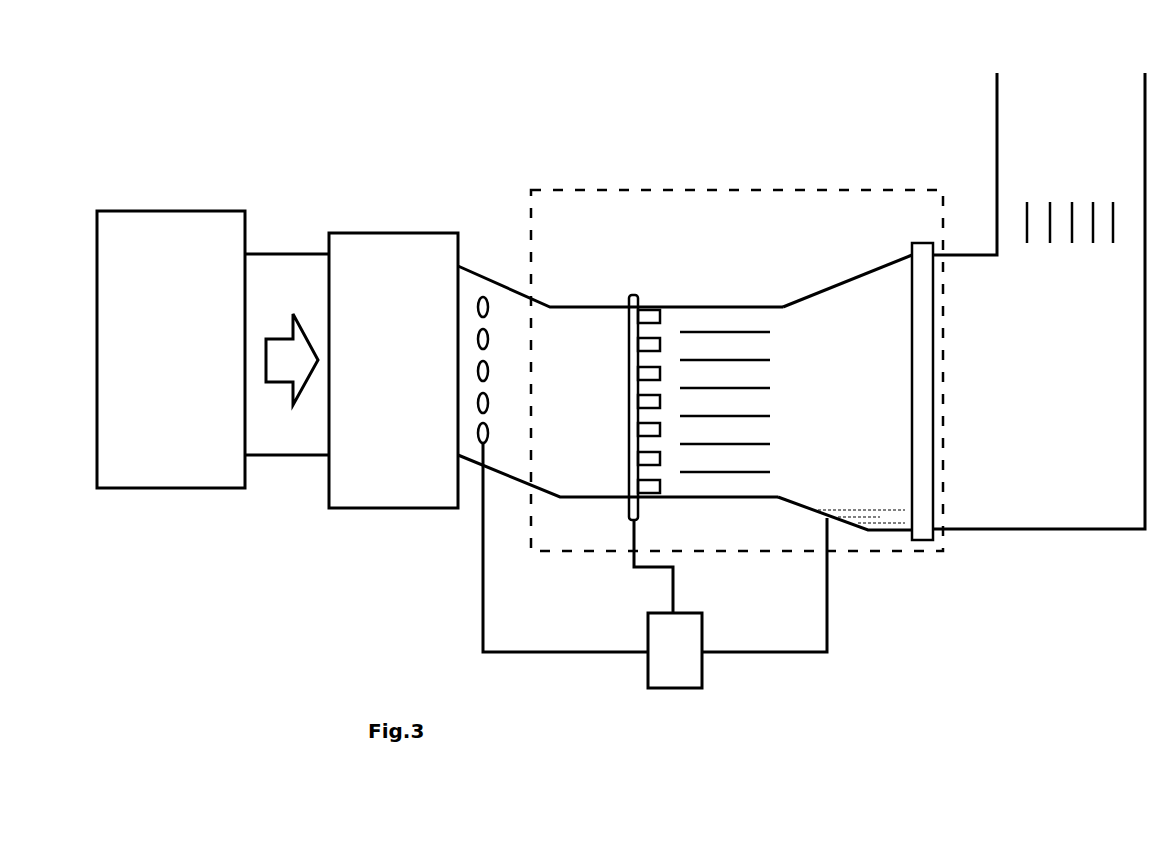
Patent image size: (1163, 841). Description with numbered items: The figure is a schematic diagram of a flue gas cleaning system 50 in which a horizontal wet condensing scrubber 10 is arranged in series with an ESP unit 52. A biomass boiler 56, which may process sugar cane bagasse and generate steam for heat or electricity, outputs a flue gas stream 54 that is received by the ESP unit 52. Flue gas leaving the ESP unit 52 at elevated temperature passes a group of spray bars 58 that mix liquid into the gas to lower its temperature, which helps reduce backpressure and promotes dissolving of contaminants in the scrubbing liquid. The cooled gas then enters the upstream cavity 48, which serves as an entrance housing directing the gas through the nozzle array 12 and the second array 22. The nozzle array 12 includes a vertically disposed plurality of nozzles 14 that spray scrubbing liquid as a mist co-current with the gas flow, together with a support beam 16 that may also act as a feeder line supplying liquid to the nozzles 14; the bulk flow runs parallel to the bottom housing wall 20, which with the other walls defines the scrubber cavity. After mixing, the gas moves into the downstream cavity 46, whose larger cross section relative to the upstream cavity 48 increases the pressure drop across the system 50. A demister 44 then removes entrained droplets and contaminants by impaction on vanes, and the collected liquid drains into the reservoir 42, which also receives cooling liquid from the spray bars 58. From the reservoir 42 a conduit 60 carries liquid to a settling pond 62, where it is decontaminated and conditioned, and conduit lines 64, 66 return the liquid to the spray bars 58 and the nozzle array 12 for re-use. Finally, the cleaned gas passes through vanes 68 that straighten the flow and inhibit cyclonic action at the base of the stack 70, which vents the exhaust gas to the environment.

The horizontal wet condensing scrubber 10 is at (682, 186).
The nozzle array 12 is at (607, 370).
The nozzles 14 is at (628, 345).
The support beam 16 is at (628, 445).
The bottom housing wall 20 is at (607, 500).
The array 22 is at (700, 345).
The reservoir 42 is at (870, 520).
The demister 44 is at (918, 243).
The downstream cavity 46 is at (850, 412).
The upstream cavity 48 is at (597, 378).
The flue gas cleaning system 50 is at (390, 33).
The ESP unit 52 is at (418, 258).
The flue gas stream 54 is at (297, 405).
The biomass boiler 56 is at (193, 455).
The spray bars 58 is at (483, 292).
The conduit 60 is at (760, 655).
The settling pond 62 is at (663, 663).
The conduit line 64 is at (483, 615).
The conduit line 66 is at (675, 592).
The vanes 68 is at (1040, 245).
The stack 70 is at (1040, 125).